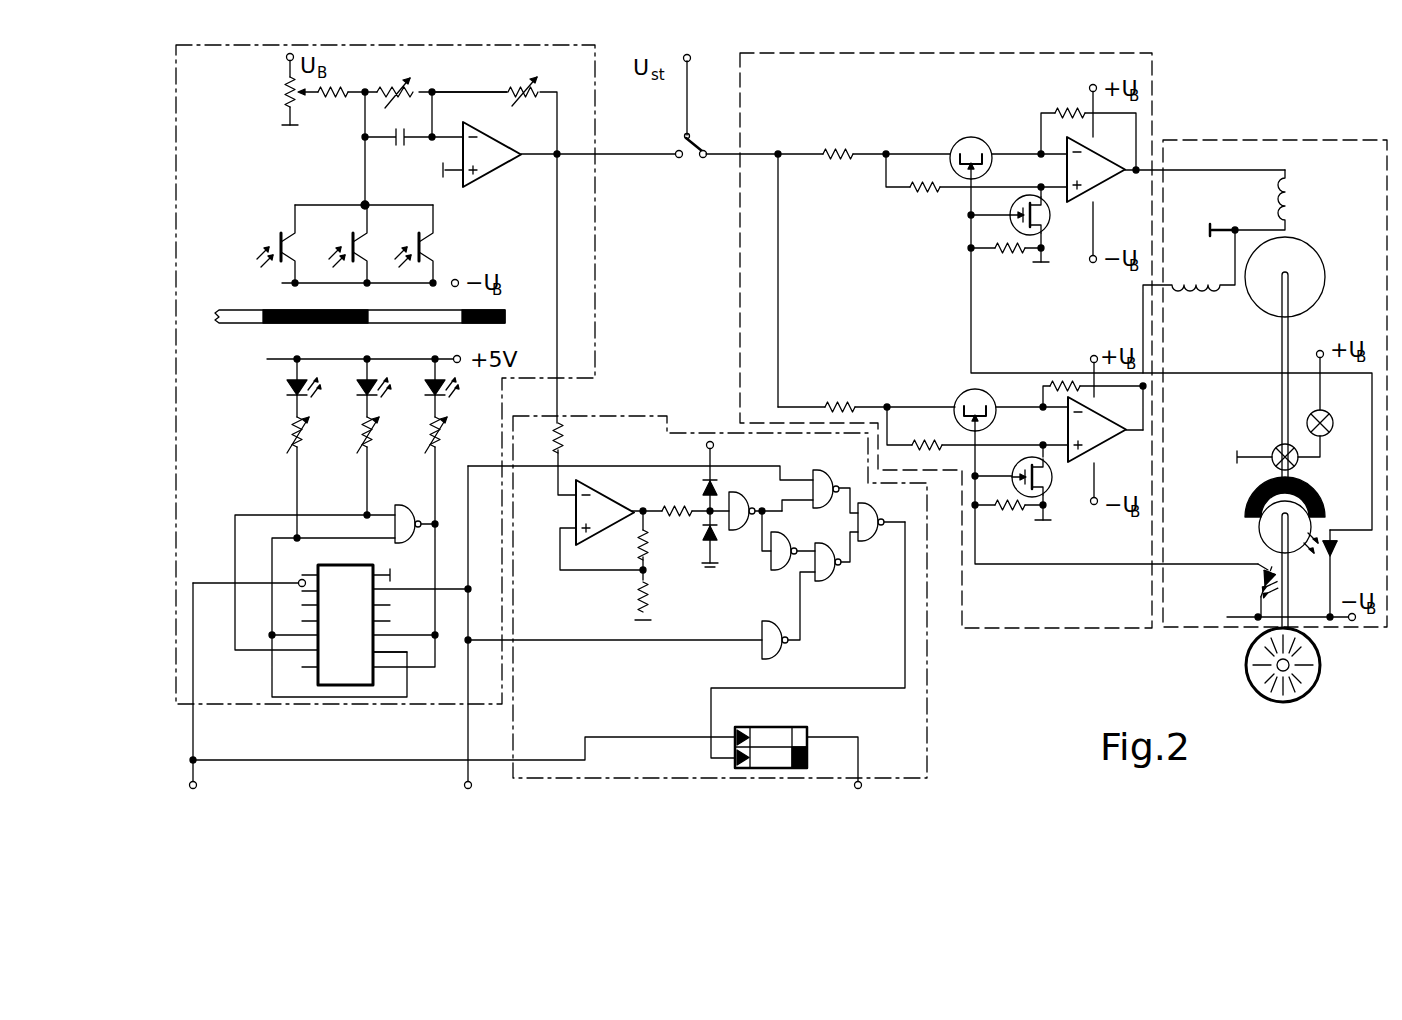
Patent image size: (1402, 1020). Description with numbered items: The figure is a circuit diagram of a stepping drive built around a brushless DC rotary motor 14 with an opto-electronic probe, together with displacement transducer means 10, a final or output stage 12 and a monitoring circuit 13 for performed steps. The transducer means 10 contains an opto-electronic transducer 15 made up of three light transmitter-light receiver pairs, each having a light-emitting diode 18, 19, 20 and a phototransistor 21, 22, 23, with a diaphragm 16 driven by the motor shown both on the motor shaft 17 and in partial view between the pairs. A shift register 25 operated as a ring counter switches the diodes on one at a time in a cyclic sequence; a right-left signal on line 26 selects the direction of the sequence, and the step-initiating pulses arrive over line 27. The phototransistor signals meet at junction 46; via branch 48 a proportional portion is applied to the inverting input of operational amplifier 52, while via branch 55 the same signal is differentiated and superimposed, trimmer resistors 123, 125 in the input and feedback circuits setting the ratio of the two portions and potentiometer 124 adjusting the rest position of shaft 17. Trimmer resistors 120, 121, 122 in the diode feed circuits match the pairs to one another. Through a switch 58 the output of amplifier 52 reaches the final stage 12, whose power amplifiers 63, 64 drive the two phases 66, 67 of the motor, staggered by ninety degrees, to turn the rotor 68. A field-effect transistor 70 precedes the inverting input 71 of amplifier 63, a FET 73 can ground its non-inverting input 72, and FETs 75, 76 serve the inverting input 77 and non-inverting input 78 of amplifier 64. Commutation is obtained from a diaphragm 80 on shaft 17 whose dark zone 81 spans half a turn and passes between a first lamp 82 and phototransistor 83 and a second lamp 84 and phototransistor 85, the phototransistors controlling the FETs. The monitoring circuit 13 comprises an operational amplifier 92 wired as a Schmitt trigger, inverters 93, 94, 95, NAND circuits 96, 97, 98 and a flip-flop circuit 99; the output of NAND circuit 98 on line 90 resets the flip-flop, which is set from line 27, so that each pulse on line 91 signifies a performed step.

The displacement transducer means 10 is at (598, 102).
The final or output stage 12 is at (1153, 120).
The monitoring circuit 13 is at (926, 753).
The brushless DC rotary motor 14 is at (1322, 148).
The opto-electronic transducer 15 is at (261, 306).
The diaphragm 16 is at (247, 330).
The motor shaft 17 is at (1280, 339).
The light-emitting diode 18 is at (289, 379).
The light-emitting diode 19 is at (359, 379).
The light-emitting diode 20 is at (429, 379).
The phototransistor 21 is at (278, 229).
The phototransistor 22 is at (348, 234).
The phototransistor 23 is at (432, 238).
The shift register 25 is at (373, 610).
The line 26 is at (468, 738).
The line 27 is at (193, 674).
The summing junction 46 is at (360, 196).
The branch 48 is at (455, 82).
The operational amplifier 52 is at (512, 138).
The branch 55 is at (407, 150).
The switch 58 is at (699, 136).
The power amplifier 63 is at (1107, 185).
The power amplifier 64 is at (1110, 444).
The phase 66 is at (1290, 184).
The phase 67 is at (1203, 298).
The motor rotor 68 is at (1326, 275).
The field-effect transistor 70 is at (971, 140).
The inverting input 71 is at (1040, 148).
The non-inverting input 72 is at (1056, 185).
The field-effect transistor 73 is at (1048, 224).
The field-effect transistor 75 is at (962, 394).
The field-effect transistor 76 is at (1048, 483).
The inverting input 77 is at (1042, 406).
The non-inverting input 78 is at (1062, 445).
The diaphragm 80 is at (1262, 531).
The dark zone 81 is at (1320, 486).
The first lamp 82 is at (1280, 444).
The phototransistor 83 is at (1261, 584).
The second lamp 84 is at (1332, 412).
The phototransistor 85 is at (1337, 542).
The line 90 is at (867, 688).
The line 91 is at (859, 748).
The operational amplifier 92 is at (597, 496).
The inverter 93 is at (747, 525).
The inverter 94 is at (771, 564).
The inverter 95 is at (763, 629).
The NAND circuit 96 is at (843, 465).
The NAND circuit 97 is at (827, 581).
The NAND circuit 98 is at (861, 538).
The flip-flop circuit 99 is at (771, 727).
The trimmer resistor 120 is at (284, 445).
The trimmer resistor 121 is at (369, 445).
The trimmer resistor 122 is at (438, 445).
The trimmer resistor 123 is at (407, 79).
The potentiometer 124 is at (294, 104).
The trimmer resistor 125 is at (534, 78).